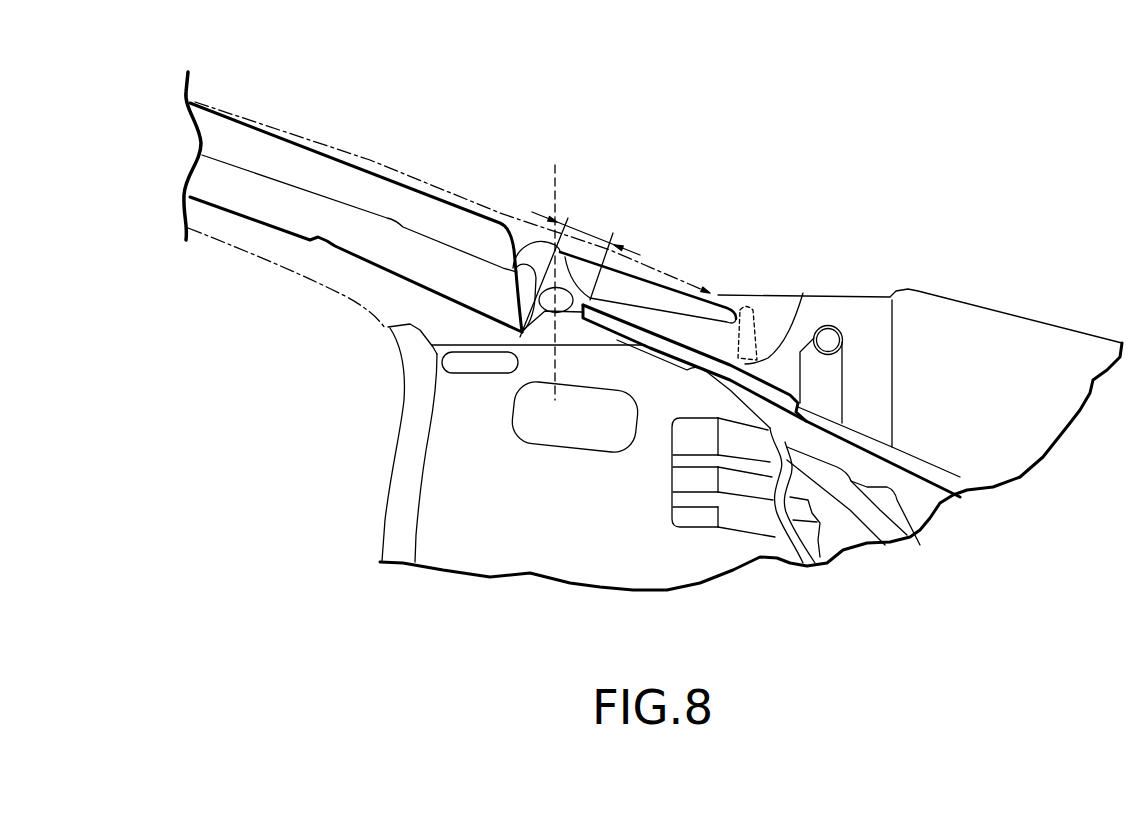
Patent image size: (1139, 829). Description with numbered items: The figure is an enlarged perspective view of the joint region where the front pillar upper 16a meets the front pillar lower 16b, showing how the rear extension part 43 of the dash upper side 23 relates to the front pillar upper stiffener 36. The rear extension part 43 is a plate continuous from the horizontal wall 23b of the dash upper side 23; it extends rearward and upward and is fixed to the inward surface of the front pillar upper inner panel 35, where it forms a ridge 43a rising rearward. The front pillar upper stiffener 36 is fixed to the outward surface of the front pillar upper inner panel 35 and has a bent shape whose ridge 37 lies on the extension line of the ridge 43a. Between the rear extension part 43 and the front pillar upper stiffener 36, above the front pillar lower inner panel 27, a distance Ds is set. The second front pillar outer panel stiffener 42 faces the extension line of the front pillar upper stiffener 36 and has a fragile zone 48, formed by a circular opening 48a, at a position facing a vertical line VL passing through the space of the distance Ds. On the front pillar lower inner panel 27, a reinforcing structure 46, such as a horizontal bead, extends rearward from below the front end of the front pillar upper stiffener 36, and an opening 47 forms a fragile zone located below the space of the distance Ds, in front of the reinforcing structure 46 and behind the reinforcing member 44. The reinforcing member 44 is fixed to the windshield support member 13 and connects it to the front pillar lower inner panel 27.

The front pillar upper 16a is at (328, 143).
The front pillar lower 16b is at (381, 523).
The front pillar upper stiffener 36 is at (380, 178).
The ridge 37 is at (518, 268).
The front pillar upper inner panel 35 is at (337, 290).
The vertical line VL is at (557, 202).
The distance Ds is at (580, 270).
The fragile zone 48 is at (571, 314).
The circular opening 48a is at (512, 326).
The second front pillar outer panel stiffener 42 is at (687, 292).
The rear extension part 43 is at (657, 350).
The ridge 43a is at (748, 332).
The dash upper side 23 is at (947, 477).
The horizontal wall 23b is at (890, 448).
The windshield support member 13 is at (883, 505).
The reinforcing member 44 is at (743, 518).
The reinforcing structure 46 is at (485, 365).
The opening 47 is at (558, 447).
The front pillar lower inner panel 27 is at (405, 463).